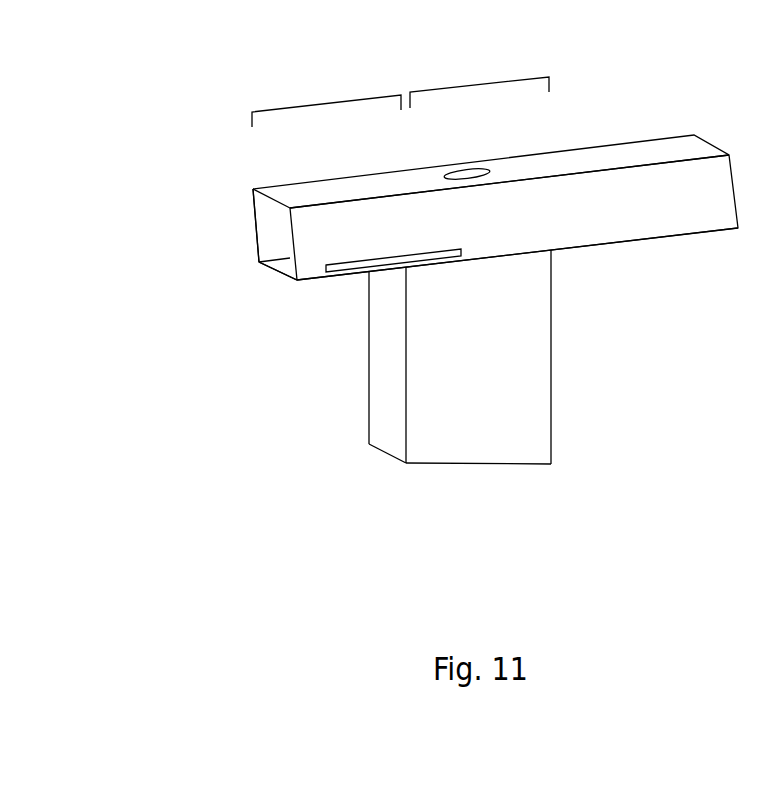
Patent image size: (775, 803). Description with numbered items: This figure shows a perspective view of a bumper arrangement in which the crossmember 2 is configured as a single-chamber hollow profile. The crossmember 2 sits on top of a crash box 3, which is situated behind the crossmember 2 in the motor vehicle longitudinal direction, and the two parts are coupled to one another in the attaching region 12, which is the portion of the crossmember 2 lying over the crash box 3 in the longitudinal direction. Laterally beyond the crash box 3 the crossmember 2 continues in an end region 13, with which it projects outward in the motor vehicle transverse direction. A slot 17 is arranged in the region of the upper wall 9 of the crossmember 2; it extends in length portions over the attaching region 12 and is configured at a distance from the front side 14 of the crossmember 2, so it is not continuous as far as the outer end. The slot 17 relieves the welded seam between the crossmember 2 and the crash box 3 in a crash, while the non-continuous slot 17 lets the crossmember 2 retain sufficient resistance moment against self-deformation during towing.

The crossmember 2 is at (599, 226).
The crash box 3 is at (520, 418).
The upper wall 9 is at (338, 227).
The attaching region 12 is at (478, 83).
The end region 13 is at (327, 102).
The front side 14 is at (256, 232).
The slot 17 is at (337, 277).